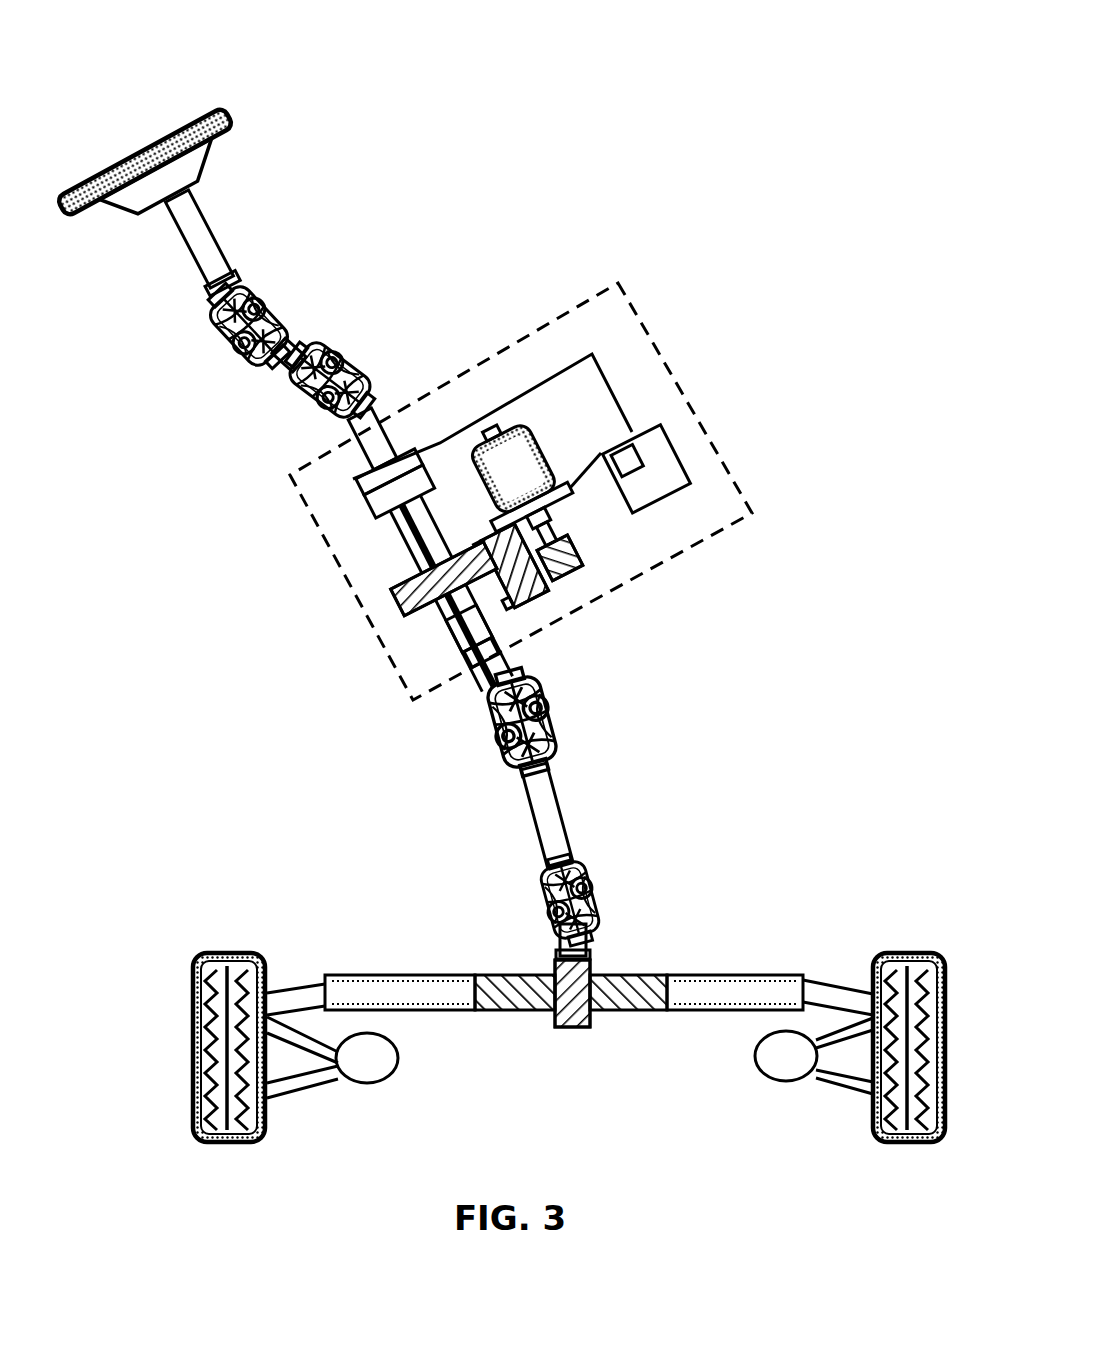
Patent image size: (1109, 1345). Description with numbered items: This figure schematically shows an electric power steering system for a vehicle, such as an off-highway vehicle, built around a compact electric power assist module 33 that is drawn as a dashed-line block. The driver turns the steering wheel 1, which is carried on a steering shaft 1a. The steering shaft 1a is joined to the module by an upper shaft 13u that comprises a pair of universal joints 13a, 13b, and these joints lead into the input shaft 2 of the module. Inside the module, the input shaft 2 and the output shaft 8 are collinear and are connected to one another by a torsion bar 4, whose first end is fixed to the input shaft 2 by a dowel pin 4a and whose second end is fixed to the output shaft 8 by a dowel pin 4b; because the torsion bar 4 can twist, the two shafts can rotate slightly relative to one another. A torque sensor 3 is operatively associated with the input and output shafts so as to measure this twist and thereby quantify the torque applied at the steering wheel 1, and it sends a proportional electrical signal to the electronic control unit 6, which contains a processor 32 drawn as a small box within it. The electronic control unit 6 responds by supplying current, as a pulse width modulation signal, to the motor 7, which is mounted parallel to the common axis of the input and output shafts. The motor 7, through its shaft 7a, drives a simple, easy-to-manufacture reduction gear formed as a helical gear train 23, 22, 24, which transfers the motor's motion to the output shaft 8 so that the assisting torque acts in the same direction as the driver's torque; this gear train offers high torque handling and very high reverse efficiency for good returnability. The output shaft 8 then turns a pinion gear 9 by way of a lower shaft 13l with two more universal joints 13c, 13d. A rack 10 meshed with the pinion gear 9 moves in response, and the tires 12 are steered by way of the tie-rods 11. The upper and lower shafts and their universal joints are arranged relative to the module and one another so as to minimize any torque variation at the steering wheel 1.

The steering wheel 1 is at (204, 106).
The steering shaft 1a is at (213, 238).
The universal joint 13a is at (262, 298).
The universal joint 13b is at (336, 352).
The upper shaft 13u is at (281, 380).
The input shaft 2 is at (381, 434).
The electric power assist module 33 is at (547, 312).
The motor 7 is at (535, 433).
The motor output shaft 7a is at (556, 508).
The electronic control unit 6 is at (665, 419).
The processor 32 is at (656, 460).
The dowel pin 4a is at (353, 468).
The torque sensor 3 is at (348, 507).
The torsion bar 4 is at (410, 543).
The helical gear 24 is at (407, 613).
The helical gear 23 is at (588, 556).
The helical gear 22 is at (585, 580).
The output shaft 8 is at (504, 640).
The dowel pin 4b is at (470, 657).
The universal joint 13c is at (495, 737).
The lower shaft 13l is at (535, 810).
The universal joint 13d is at (545, 900).
The pinion gear 9 is at (594, 963).
The rack 10 is at (655, 972).
The tie-rod 11 is at (307, 987).
The tire 12 is at (270, 960).